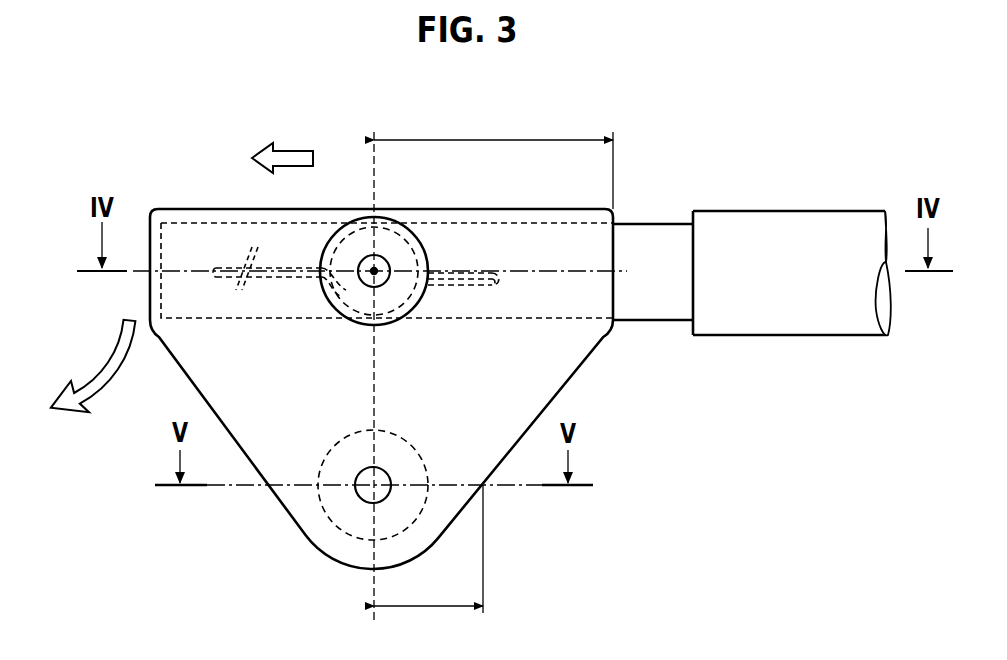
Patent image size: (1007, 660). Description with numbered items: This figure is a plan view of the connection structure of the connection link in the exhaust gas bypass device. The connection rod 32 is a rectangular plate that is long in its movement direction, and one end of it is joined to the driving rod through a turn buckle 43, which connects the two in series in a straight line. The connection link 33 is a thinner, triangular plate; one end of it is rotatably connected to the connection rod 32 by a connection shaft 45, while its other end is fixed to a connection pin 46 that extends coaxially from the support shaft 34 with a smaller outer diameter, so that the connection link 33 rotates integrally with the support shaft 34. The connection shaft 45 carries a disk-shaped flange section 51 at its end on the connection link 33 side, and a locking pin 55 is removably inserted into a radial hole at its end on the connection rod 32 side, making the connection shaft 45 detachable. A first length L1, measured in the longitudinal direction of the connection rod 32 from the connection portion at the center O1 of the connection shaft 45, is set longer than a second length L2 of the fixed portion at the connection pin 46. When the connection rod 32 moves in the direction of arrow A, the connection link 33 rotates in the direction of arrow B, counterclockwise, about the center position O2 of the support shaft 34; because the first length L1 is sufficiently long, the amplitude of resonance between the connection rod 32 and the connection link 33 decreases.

The connection link 33 is at (172, 206).
The connection rod 32 is at (652, 222).
The turn buckle 43 is at (793, 320).
The connection shaft 45 is at (325, 232).
The flange section 51 is at (427, 300).
The locking pin 55 is at (492, 290).
The support shaft 34 is at (340, 431).
The connection pin 46 is at (373, 497).
The center position of connection shaft O1 is at (377, 270).
The center position of support shaft O2 is at (375, 485).
The first length L1 is at (493, 156).
The second length L2 is at (428, 549).
The arrow A is at (290, 150).
The arrow B is at (85, 346).